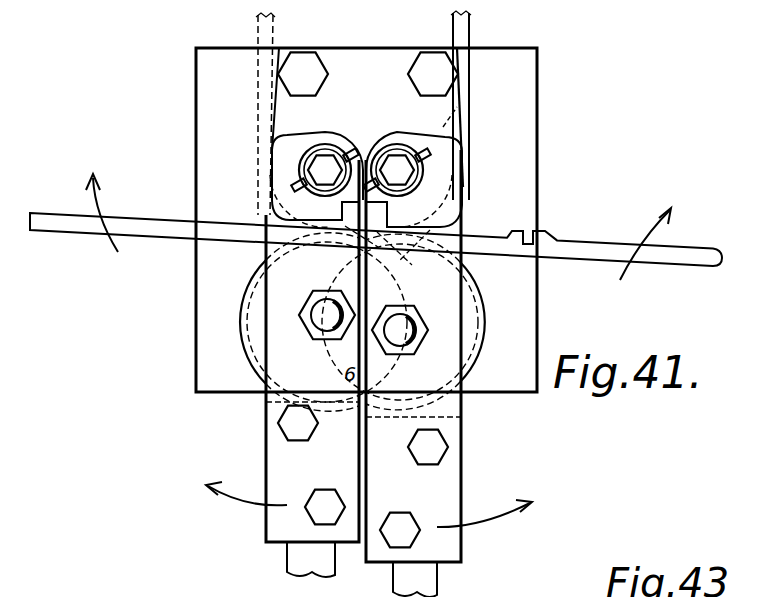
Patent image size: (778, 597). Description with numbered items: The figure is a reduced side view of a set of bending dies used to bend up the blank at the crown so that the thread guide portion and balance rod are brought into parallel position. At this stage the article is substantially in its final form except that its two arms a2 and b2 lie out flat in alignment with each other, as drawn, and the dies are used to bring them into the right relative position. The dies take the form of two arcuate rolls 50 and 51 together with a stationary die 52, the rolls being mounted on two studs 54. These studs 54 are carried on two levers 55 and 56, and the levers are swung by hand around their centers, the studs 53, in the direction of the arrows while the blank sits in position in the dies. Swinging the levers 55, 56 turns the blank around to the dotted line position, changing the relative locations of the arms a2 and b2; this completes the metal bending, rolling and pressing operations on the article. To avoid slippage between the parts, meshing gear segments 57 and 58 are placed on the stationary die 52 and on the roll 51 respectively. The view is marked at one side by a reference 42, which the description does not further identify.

The frame plate 42 is at (190, 348).
The arm a2 is at (273, 28).
The arm b2 is at (469, 28).
The arcuate roll 50 is at (254, 340).
The arcuate roll 51 is at (468, 337).
The stationary die 52 is at (443, 210).
The stud 53 is at (325, 168).
The stud 54 is at (325, 315).
The lever 55 is at (269, 448).
The lever 56 is at (455, 468).
The gear segment 57 is at (467, 182).
The gear segment 58 is at (534, 302).